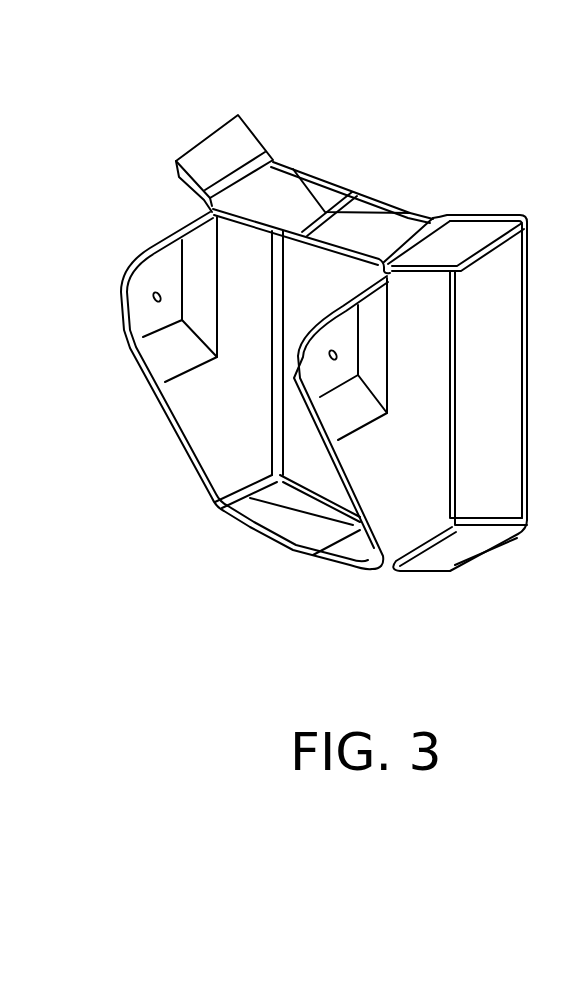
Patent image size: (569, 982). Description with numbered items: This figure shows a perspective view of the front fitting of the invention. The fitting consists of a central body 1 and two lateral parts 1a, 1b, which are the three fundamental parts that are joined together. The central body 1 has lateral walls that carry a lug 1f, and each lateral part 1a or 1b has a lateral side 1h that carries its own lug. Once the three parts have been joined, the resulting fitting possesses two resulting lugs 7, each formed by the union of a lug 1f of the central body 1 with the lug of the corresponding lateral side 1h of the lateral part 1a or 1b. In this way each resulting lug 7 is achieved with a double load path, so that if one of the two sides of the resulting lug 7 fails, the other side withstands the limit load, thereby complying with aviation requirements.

The central body 1 is at (325, 193).
The lateral part 1a is at (213, 150).
The lateral part 1b is at (467, 233).
The lug of the lateral walls of the central body 1f is at (332, 470).
The lateral side of the lateral parts 1h is at (390, 490).
The resulting lug 7 is at (165, 403).